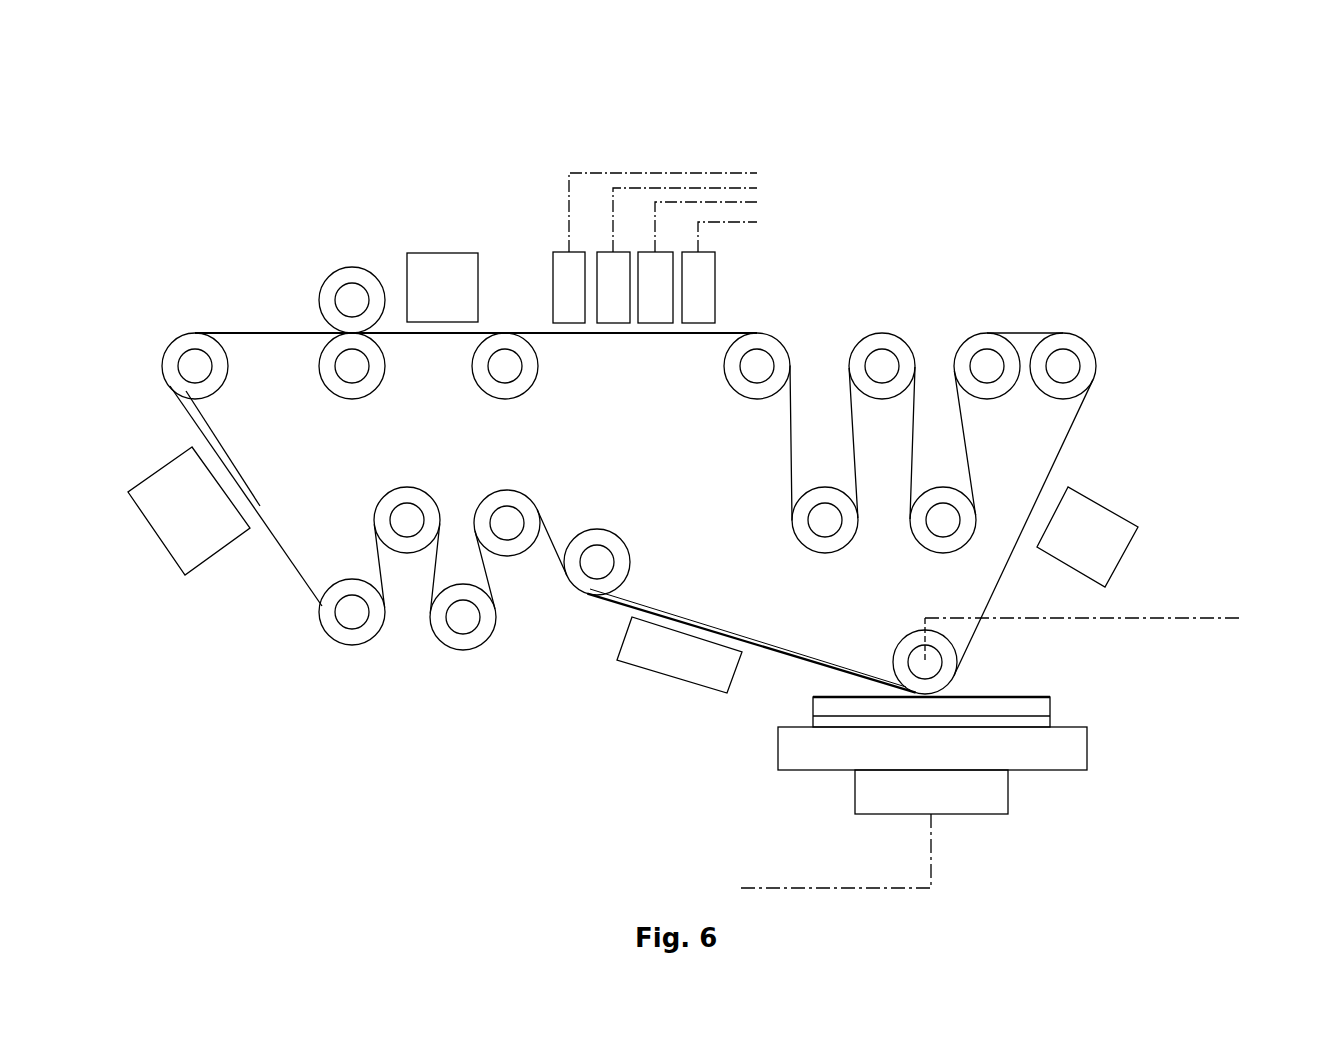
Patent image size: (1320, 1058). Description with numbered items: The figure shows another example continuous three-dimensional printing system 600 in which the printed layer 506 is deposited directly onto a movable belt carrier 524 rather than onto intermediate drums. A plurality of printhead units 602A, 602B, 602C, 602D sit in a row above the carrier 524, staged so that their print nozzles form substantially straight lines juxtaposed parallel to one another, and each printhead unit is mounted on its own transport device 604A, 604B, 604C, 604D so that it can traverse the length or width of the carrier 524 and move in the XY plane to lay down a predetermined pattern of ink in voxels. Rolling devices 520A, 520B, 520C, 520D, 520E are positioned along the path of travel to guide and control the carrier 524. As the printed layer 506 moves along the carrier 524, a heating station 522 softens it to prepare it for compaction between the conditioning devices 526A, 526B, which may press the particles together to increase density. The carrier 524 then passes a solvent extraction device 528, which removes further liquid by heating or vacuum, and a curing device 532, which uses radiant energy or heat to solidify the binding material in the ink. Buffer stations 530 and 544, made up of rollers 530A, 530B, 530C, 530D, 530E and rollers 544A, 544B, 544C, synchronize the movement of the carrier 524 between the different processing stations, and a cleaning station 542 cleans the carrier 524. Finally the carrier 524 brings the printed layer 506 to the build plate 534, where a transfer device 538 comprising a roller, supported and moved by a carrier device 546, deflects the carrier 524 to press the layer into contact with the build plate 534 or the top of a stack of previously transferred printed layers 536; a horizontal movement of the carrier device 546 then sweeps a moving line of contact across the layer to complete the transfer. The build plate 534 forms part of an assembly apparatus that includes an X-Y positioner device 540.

The continuous 3D printing system 600 is at (237, 107).
The printed layer 506 is at (290, 330).
The rolling device 520A is at (527, 390).
The rolling device 520B is at (166, 345).
The rolling device 520C is at (1086, 345).
The rolling device 520D is at (982, 333).
The rolling device 520E is at (745, 392).
The heating station 522 is at (437, 252).
The carrier 524 is at (435, 340).
The conditioning device 526A is at (332, 273).
The conditioning device 526B is at (356, 400).
The solvent extraction device 528 is at (206, 567).
The buffer station 530 is at (465, 569).
The roller 530A is at (337, 644).
The roller 530B is at (393, 494).
The roller 530C is at (479, 648).
The roller 530D is at (490, 497).
The roller 530E is at (614, 530).
The curing device 532 is at (672, 685).
The build plate 534 is at (1086, 770).
The stack of printed layers 536 is at (1052, 705).
The transfer device 538 is at (892, 650).
The X-Y positioner device 540 is at (807, 857).
The cleaning station 542 is at (1112, 500).
The buffer station 544 is at (855, 318).
The roller 544A is at (885, 333).
The roller 544B is at (803, 546).
The roller 544C is at (935, 550).
The carrier device 546 is at (1112, 613).
The printhead unit 602A is at (716, 283).
The printhead unit 602B is at (583, 325).
The printhead unit 602C is at (618, 325).
The printhead unit 602D is at (663, 325).
The transport device 604A is at (757, 222).
The transport device 604B is at (757, 202).
The transport device 604C is at (757, 188).
The transport device 604D is at (757, 173).